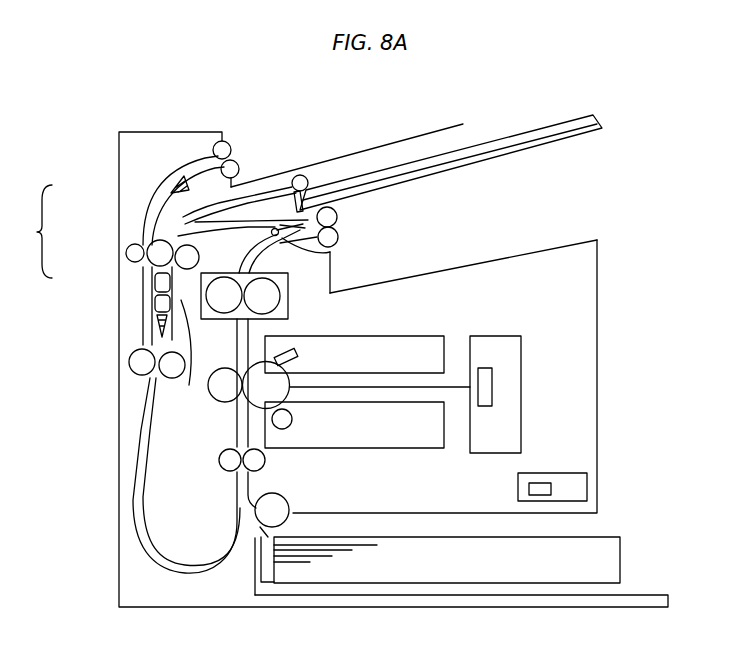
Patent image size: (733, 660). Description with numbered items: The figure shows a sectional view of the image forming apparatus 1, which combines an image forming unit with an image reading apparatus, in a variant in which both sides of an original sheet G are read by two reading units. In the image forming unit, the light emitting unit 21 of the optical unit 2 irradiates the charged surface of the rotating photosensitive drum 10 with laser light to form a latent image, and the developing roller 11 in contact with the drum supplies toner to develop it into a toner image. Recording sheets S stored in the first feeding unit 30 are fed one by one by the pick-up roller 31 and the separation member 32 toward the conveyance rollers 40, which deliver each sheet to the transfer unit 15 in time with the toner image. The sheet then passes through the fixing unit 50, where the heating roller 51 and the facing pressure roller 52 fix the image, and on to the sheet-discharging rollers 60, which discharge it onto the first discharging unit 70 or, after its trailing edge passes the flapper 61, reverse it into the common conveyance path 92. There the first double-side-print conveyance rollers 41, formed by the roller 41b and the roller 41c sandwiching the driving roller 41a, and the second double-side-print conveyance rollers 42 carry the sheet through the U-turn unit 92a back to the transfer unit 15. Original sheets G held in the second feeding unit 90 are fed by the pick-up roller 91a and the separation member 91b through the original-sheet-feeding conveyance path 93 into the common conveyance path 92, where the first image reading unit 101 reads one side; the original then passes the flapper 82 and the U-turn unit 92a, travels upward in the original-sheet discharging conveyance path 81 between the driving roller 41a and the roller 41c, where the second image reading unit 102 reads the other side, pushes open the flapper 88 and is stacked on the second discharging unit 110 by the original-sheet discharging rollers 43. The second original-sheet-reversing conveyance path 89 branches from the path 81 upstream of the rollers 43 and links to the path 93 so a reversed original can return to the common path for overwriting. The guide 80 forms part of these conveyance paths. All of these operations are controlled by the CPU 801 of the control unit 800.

The image forming apparatus 1 is at (598, 292).
The optical unit 2 is at (494, 336).
The photosensitive drum 10 is at (298, 360).
The developing roller 11 is at (292, 419).
The transfer unit 15 is at (225, 402).
The light emitting unit 21 is at (493, 380).
The first feeding unit 30 is at (660, 595).
The pick-up roller 31 is at (290, 505).
The separation member 32 is at (266, 559).
The conveyance rollers 40 is at (265, 462).
The first double-side-print conveyance rollers 41 is at (32, 231).
The driving roller 41a is at (148, 250).
The roller 41b is at (176, 247).
The roller 41c is at (127, 256).
The second double-side-print conveyance rollers 42 is at (165, 376).
The original-sheet discharging rollers 43 is at (224, 141).
The fixing unit 50 is at (288, 282).
The heating roller 51 is at (276, 306).
The pressure roller 52 is at (222, 313).
The sheet-discharging rollers 60 is at (338, 220).
The flapper 61 is at (331, 256).
The first discharging unit 70 is at (546, 250).
The conveying guide 80 is at (244, 218).
The original-sheet discharging conveyance path 81 is at (142, 195).
The flapper 82 is at (129, 362).
The flapper 88 is at (175, 176).
The second original-sheet-reversing conveyance path 89 is at (158, 176).
The second feeding unit 90 is at (510, 153).
The pick-up roller 91a is at (304, 176).
The separation member 91b is at (305, 209).
The common conveyance path 92 is at (188, 318).
The U-turn unit 92a is at (133, 530).
The original-sheet-feeding conveyance path 93 is at (278, 198).
The first image reading unit 101 is at (154, 282).
The second image reading unit 102 is at (154, 303).
The second discharging unit 110 is at (405, 139).
The control unit 800 is at (563, 473).
The CPU 801 is at (551, 489).
The original sheet G is at (565, 118).
The recording sheet S is at (618, 548).